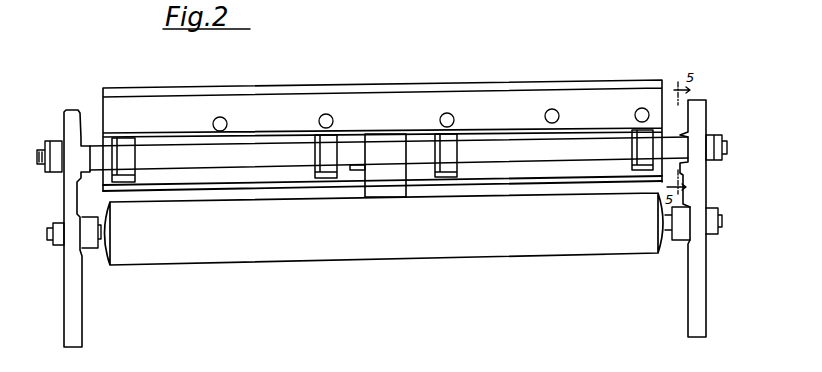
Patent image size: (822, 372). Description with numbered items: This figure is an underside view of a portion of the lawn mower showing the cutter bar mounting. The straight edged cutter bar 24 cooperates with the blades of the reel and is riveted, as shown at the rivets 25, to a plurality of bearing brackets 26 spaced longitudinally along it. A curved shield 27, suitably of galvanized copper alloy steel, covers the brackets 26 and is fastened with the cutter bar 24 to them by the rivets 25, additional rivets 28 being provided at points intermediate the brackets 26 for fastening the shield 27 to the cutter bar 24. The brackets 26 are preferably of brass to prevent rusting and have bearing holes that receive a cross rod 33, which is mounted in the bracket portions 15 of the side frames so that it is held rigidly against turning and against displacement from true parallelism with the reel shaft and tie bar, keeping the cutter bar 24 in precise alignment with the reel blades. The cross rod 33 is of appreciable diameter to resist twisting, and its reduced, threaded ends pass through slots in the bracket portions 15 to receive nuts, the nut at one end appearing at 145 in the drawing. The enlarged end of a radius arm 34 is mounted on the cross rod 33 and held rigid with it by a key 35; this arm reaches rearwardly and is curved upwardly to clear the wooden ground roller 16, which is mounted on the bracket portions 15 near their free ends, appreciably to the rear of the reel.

The bracket portions 15 is at (700, 256).
The wooden ground roller 16 is at (572, 251).
The cutter bar 24 is at (541, 84).
The rivets 25 is at (455, 115).
The bearing brackets 26 is at (459, 156).
The curved shield 27 is at (605, 174).
The additional rivets 28 is at (559, 113).
The cross rod 33 is at (550, 157).
The radius arm 34 is at (387, 193).
The key 35 is at (357, 171).
The nut 145 is at (697, 140).